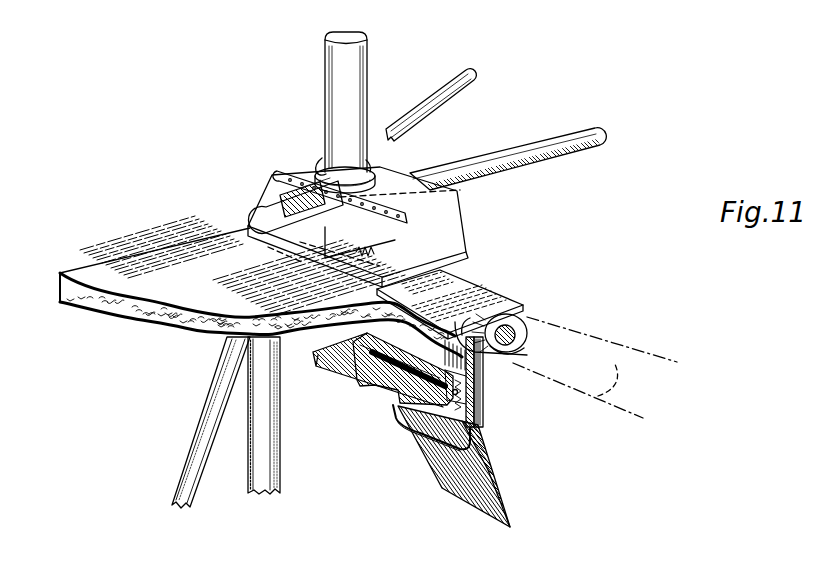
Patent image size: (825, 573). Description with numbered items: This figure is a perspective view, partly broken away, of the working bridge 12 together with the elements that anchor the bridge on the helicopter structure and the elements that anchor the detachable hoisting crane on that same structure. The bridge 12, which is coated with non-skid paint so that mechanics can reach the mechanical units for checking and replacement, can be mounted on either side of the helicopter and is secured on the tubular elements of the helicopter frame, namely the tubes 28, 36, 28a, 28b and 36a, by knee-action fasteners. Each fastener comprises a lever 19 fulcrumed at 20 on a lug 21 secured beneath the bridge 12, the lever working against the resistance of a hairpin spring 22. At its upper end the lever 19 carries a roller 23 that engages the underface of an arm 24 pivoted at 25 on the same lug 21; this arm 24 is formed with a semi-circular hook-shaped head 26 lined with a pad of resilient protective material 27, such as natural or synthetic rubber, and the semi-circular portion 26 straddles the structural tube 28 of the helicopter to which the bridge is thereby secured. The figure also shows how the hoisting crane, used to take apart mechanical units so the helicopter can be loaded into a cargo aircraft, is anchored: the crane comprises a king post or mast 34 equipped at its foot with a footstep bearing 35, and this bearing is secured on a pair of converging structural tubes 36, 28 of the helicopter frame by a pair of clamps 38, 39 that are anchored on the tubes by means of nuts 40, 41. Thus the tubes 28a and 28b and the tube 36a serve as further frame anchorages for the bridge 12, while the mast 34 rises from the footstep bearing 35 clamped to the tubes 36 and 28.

The working bridge 12 is at (164, 296).
The lever 19 is at (490, 503).
The fulcrum 20 is at (484, 422).
The lug 21 is at (476, 410).
The hairpin spring 22 is at (403, 421).
The roller 23 is at (377, 363).
The arm 24 is at (473, 340).
The pivot 25 is at (397, 408).
The semi-circular hook-shaped head 26 is at (558, 341).
The pad of resilient protective material 27 is at (513, 355).
The structural tube 28 is at (288, 238).
The tube 28a is at (212, 402).
The tube 28b is at (265, 435).
The king post or mast 34 is at (363, 55).
The footstep bearing 35 is at (350, 170).
The structural tube 36 is at (537, 140).
The tube 36a is at (460, 92).
The clamp 38 is at (290, 180).
The clamp 39 is at (470, 276).
The nut 40 is at (320, 162).
The nut 41 is at (373, 247).